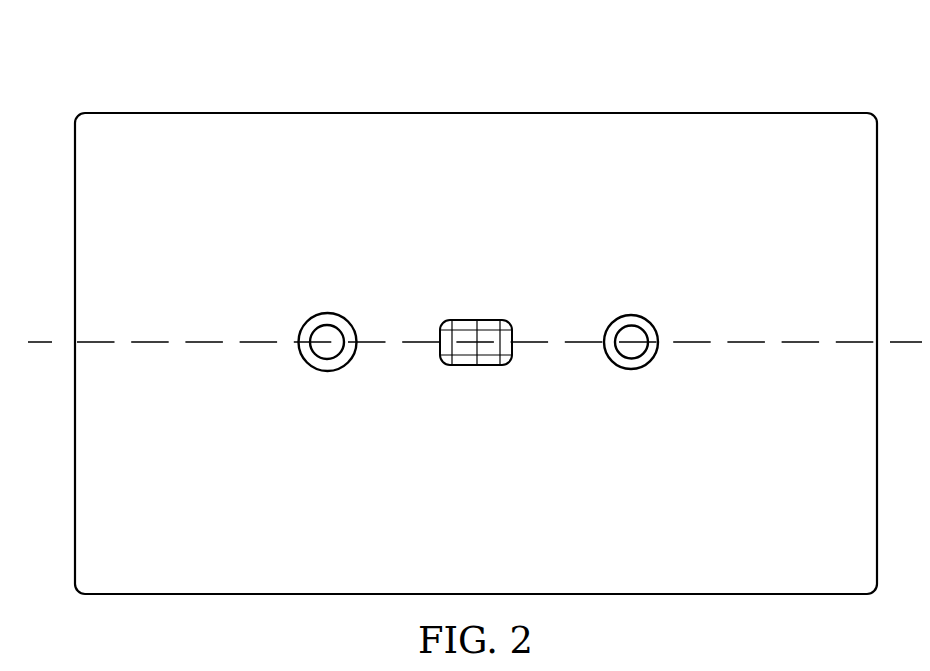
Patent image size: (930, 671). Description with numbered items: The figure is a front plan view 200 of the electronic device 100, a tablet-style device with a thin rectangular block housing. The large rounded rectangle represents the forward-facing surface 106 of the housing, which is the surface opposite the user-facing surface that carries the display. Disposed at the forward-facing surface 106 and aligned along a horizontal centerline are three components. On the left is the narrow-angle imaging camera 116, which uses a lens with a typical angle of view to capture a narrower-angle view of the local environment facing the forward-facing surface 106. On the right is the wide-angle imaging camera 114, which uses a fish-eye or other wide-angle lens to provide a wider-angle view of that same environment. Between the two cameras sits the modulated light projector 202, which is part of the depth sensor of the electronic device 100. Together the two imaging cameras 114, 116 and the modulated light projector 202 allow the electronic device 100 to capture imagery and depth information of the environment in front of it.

The front plan view 200 is at (215, 80).
The electronic device 100 is at (655, 102).
The forward-facing surface 106 is at (134, 580).
The narrow-angle imaging camera 116 is at (327, 312).
The modulated light projector 202 is at (462, 318).
The wide-angle imaging camera 114 is at (632, 315).